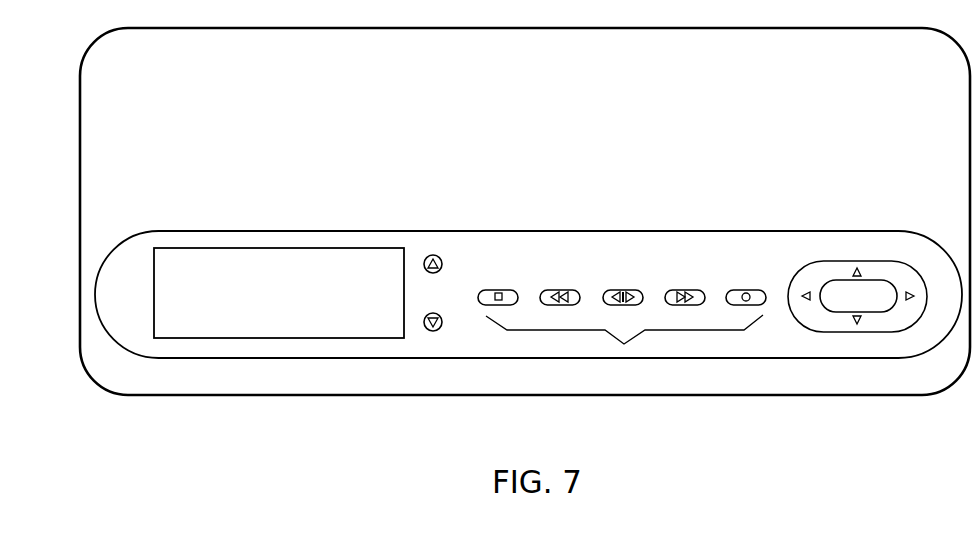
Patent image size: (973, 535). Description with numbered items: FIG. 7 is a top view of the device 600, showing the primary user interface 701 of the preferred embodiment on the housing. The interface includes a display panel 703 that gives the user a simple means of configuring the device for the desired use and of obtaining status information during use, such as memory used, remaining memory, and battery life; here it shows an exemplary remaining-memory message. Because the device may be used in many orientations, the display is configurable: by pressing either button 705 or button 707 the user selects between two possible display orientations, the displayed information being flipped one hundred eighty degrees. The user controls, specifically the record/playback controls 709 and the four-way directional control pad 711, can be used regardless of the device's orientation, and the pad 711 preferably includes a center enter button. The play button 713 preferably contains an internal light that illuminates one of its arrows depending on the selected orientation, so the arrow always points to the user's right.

The device 600 is at (533, 94).
The primary user interface 701 is at (565, 239).
The display panel 703 is at (280, 246).
The button 705 is at (444, 264).
The button 707 is at (446, 324).
The record/playback controls 709 is at (622, 314).
The four-way directional control pad 711 is at (845, 259).
The play button 713 is at (623, 284).